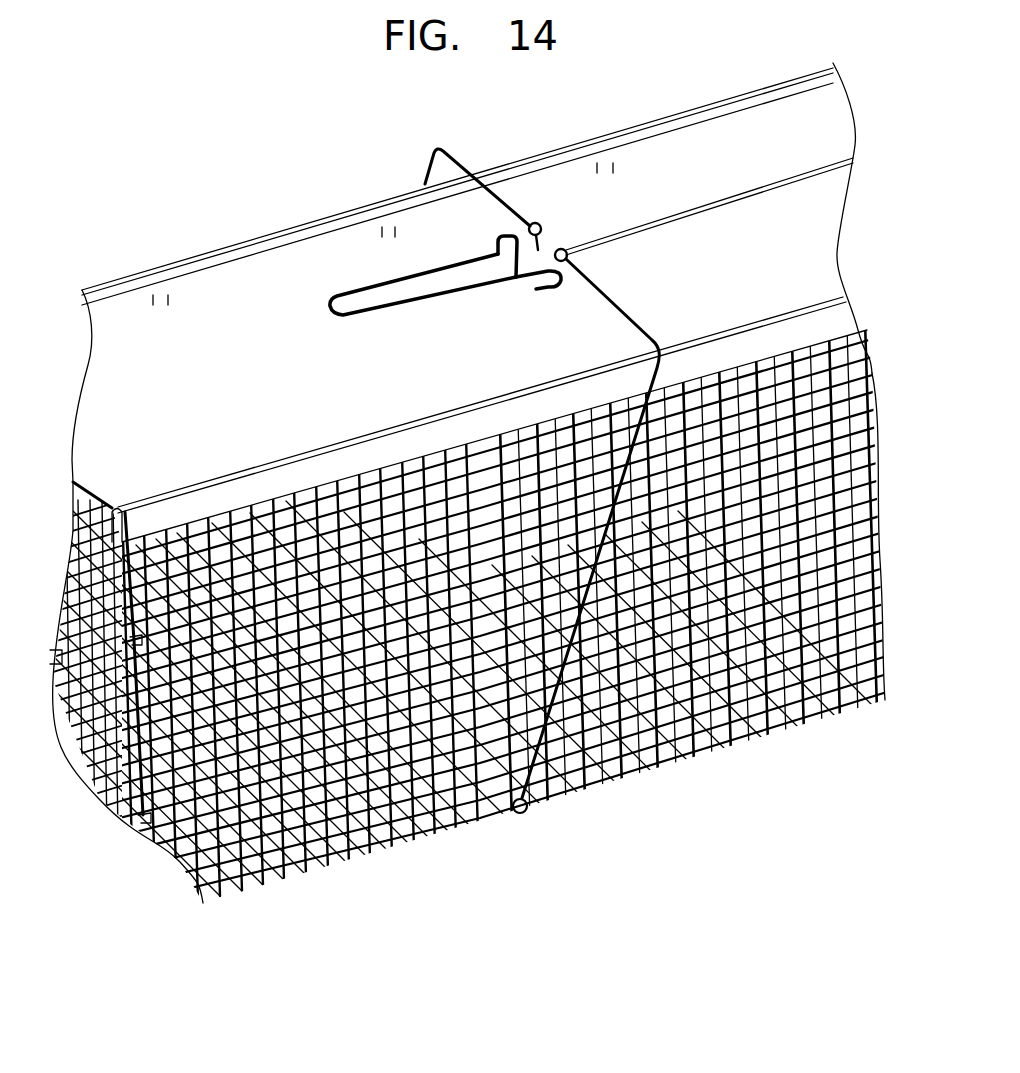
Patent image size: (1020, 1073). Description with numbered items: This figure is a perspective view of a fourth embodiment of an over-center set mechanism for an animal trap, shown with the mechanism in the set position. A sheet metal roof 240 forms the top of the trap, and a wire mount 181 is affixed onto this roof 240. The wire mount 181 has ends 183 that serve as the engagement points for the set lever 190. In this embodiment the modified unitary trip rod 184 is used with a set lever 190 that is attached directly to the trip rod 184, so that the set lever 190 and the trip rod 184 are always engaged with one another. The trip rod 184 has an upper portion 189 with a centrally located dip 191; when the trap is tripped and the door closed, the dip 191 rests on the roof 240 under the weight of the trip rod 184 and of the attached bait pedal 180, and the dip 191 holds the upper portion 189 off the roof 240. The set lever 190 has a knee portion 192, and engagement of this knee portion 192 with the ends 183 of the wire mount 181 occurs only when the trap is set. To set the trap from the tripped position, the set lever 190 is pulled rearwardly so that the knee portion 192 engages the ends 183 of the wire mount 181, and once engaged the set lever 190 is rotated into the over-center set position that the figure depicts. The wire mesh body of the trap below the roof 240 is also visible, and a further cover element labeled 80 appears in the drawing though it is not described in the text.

The cover 80 is at (712, 200).
The roof 240 is at (200, 377).
The trip rod 184 is at (595, 735).
The set lever 190 is at (356, 297).
The knee portion 192 is at (490, 235).
The dip 191 is at (546, 236).
The ends 183 is at (530, 286).
The wire mount 181 is at (548, 280).
The upper portion 189 is at (620, 296).
The bait pedal 180 is at (560, 782).